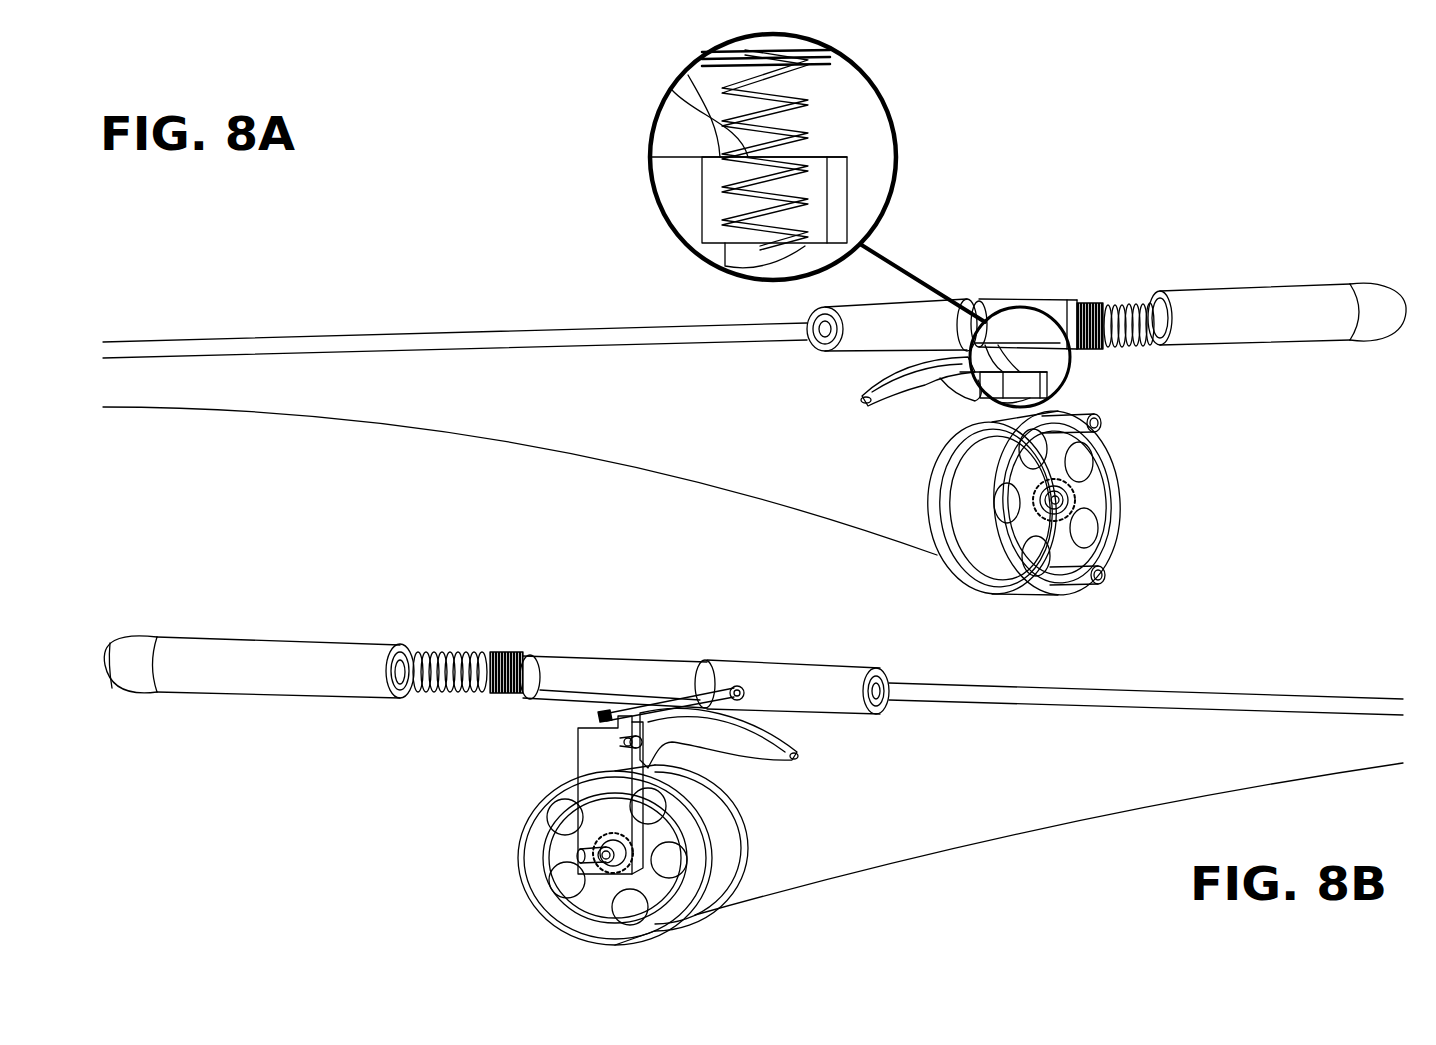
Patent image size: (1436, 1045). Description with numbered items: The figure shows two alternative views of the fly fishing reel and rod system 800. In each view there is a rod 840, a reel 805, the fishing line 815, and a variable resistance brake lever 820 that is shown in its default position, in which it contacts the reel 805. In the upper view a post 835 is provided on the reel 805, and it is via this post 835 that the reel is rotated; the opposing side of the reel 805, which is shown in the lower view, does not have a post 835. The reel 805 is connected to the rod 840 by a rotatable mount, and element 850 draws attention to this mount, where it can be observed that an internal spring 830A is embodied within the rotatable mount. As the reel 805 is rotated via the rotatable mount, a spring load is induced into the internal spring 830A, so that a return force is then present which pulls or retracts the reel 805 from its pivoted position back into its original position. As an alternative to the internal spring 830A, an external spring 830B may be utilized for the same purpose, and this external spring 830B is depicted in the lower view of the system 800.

In FIG. 8A, the fly fishing reel and rod system 800 is at (1270, 78).
In FIG. 8A, the reel 805 is at (1085, 526).
In FIG. 8B, the reel 805 is at (499, 835).
In FIG. 8A, the fishing line 815 is at (398, 438).
In FIG. 8B, the fishing line 815 is at (998, 860).
In FIG. 8A, the variable resistance brake lever 820 is at (845, 389).
In FIG. 8B, the variable resistance brake lever 820 is at (751, 768).
In FIG. 8A, the internal spring 830A is at (826, 89).
In FIG. 8B, the external spring 830B is at (645, 688).
In FIG. 8A, the post 835 is at (1102, 605).
In FIG. 8A, the rod 840 is at (1236, 360).
In FIG. 8B, the rod 840 is at (192, 712).
In FIG. 8A, the element showing the internal spring 850 is at (791, 220).